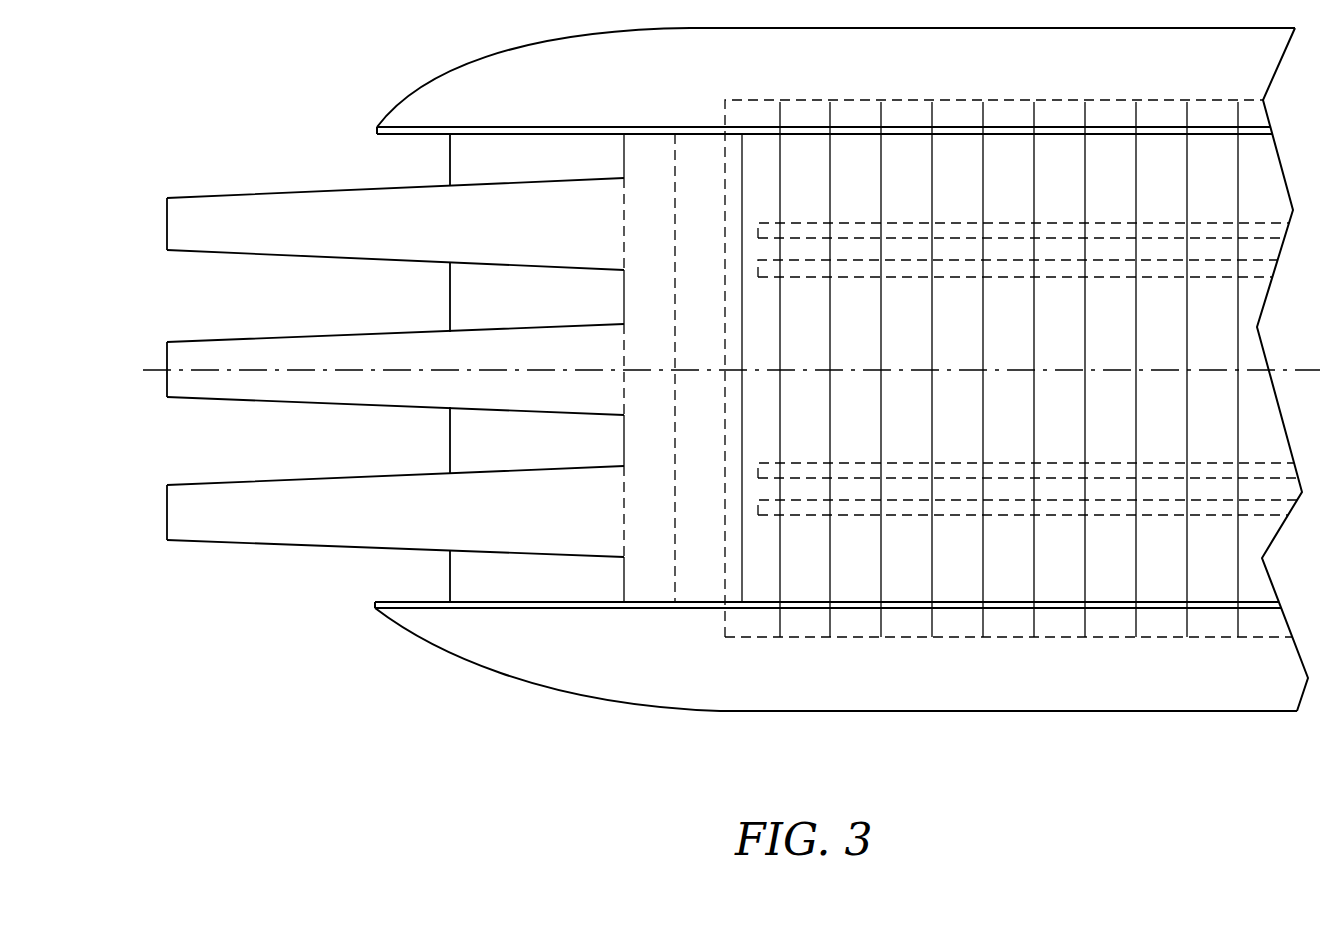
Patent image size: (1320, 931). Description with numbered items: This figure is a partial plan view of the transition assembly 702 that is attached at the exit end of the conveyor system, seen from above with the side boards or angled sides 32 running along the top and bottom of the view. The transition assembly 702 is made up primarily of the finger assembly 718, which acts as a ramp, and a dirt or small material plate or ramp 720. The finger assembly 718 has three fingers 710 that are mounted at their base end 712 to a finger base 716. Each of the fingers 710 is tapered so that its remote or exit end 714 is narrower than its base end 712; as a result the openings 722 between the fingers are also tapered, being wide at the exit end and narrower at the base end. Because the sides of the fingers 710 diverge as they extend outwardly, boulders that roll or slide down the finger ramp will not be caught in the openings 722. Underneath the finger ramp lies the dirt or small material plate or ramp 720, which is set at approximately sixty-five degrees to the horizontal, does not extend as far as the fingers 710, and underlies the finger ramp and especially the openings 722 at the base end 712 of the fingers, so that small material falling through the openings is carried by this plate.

The side boards or angled sides 32 is at (937, 74).
The transition assembly 702 is at (338, 594).
The fingers 710 is at (287, 244).
The base end 712 is at (624, 204).
The remote or exit end 714 is at (167, 218).
The finger base 716 is at (697, 311).
The finger assembly 718 is at (268, 152).
The dirt or small material plate or ramp 720 is at (537, 311).
The openings 722 is at (367, 306).